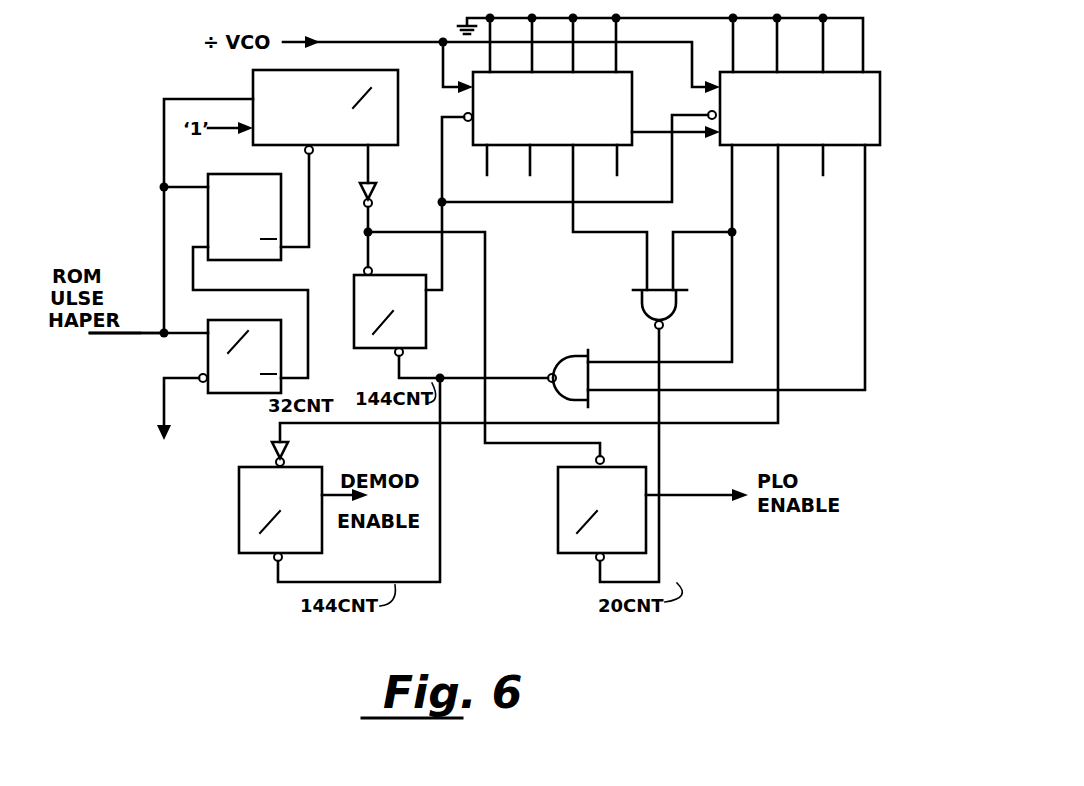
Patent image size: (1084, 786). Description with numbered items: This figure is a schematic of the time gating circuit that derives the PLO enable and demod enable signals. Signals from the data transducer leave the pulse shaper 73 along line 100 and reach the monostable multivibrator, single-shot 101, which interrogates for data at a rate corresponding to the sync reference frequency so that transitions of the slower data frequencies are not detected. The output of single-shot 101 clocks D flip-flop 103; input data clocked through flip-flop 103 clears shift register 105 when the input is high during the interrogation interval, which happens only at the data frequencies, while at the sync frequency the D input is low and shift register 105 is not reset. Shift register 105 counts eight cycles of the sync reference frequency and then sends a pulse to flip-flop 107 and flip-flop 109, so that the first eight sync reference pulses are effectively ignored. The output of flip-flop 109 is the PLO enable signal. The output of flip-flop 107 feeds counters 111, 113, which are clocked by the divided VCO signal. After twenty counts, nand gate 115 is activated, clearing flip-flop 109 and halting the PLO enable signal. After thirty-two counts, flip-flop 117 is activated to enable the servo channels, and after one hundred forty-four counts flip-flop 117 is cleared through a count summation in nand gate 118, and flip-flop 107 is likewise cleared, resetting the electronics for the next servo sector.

The pulse shaper 73 is at (127, 322).
The line 100 is at (129, 337).
The single-shot 101 is at (253, 383).
The D flip-flop 103 is at (252, 253).
The shift register 105 is at (341, 78).
The flip-flop 107 is at (426, 323).
The flip-flop 109 is at (560, 485).
The counter 111 is at (622, 86).
The counter 113 is at (870, 90).
The nand gate 115 is at (668, 307).
The flip-flop 117 is at (247, 520).
The nand gate 118 is at (574, 365).